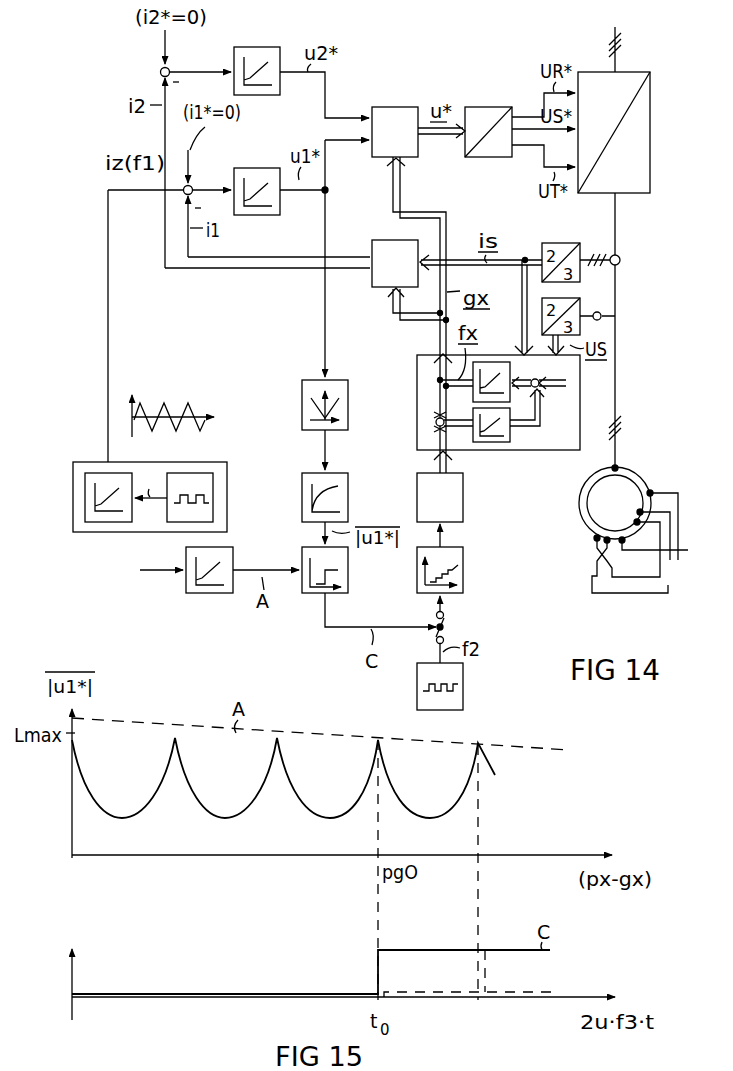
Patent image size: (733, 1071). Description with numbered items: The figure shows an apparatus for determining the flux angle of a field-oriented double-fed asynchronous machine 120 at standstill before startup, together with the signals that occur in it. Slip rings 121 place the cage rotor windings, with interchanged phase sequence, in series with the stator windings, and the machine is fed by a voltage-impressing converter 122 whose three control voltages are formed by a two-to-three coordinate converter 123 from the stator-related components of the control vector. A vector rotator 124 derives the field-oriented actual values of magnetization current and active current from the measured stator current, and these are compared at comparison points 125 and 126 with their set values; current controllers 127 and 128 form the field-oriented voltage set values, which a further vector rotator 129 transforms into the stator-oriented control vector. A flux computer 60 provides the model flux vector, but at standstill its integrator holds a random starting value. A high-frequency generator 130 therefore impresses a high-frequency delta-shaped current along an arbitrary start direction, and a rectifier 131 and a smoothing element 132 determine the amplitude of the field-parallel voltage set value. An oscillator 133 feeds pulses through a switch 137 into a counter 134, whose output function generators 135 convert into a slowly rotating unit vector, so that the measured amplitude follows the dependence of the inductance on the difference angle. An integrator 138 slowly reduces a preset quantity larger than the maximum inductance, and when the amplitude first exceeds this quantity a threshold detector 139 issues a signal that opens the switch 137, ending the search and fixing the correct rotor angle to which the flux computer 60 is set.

The flux computer 60 is at (534, 450).
The double-fed asynchronous machine 120 is at (578, 508).
The slip rings 121 is at (665, 580).
The voltage-impressing converter 122 is at (650, 133).
The 2/3 coordinate converter 123 is at (489, 106).
The vector rotator 124 is at (372, 240).
The comparison point 125 is at (193, 186).
The comparison point 126 is at (171, 68).
The current controller 127 is at (260, 168).
The current controller 128 is at (263, 47).
The vector rotator 129 is at (394, 106).
The high-frequency generator 130 is at (73, 491).
The rectifier 131 is at (301, 402).
The smoothing element 132 is at (301, 498).
The oscillator 133 is at (466, 692).
The counter 134 is at (465, 574).
The function generators 135 is at (465, 501).
The switch 137 is at (445, 622).
The integrator 138 is at (212, 595).
The threshold detector 139 is at (350, 573).